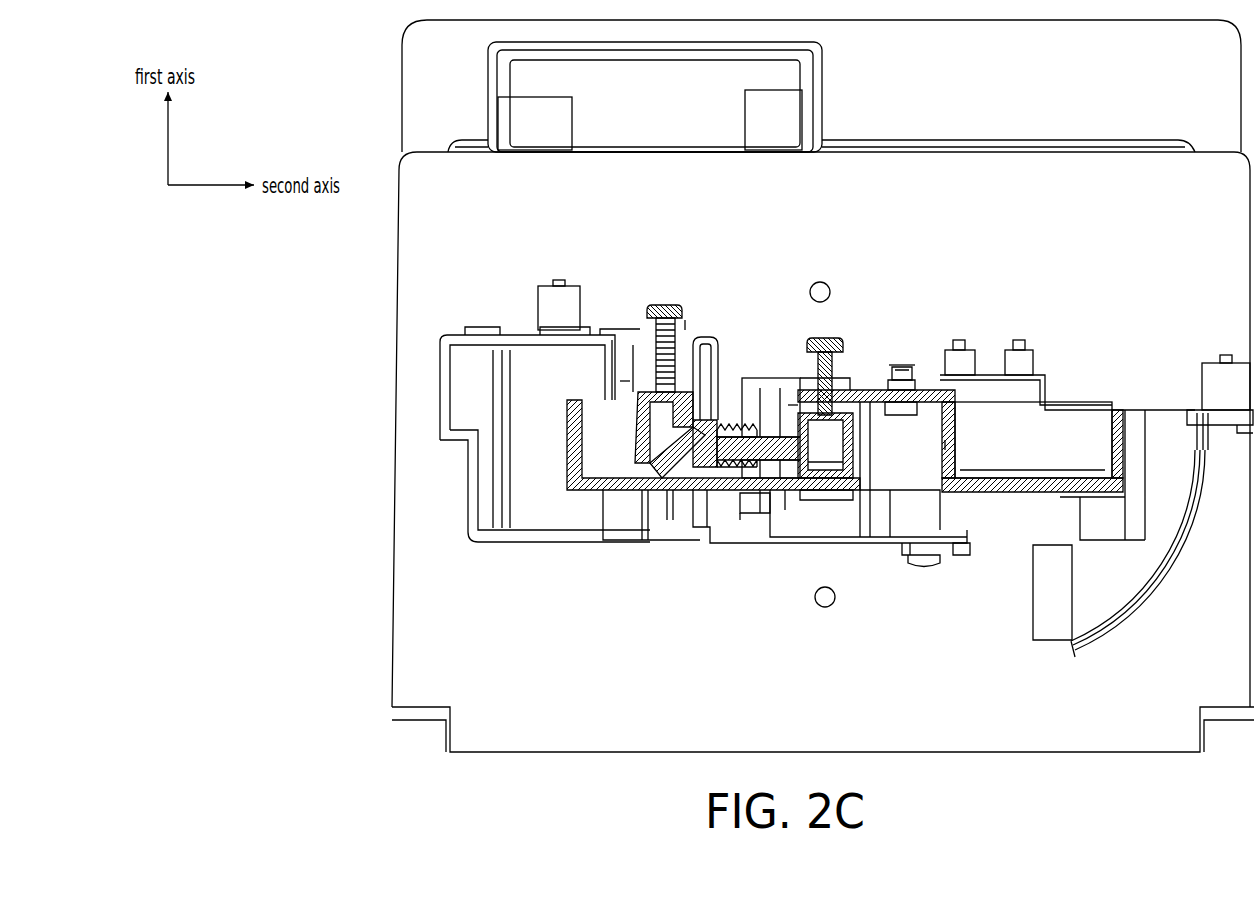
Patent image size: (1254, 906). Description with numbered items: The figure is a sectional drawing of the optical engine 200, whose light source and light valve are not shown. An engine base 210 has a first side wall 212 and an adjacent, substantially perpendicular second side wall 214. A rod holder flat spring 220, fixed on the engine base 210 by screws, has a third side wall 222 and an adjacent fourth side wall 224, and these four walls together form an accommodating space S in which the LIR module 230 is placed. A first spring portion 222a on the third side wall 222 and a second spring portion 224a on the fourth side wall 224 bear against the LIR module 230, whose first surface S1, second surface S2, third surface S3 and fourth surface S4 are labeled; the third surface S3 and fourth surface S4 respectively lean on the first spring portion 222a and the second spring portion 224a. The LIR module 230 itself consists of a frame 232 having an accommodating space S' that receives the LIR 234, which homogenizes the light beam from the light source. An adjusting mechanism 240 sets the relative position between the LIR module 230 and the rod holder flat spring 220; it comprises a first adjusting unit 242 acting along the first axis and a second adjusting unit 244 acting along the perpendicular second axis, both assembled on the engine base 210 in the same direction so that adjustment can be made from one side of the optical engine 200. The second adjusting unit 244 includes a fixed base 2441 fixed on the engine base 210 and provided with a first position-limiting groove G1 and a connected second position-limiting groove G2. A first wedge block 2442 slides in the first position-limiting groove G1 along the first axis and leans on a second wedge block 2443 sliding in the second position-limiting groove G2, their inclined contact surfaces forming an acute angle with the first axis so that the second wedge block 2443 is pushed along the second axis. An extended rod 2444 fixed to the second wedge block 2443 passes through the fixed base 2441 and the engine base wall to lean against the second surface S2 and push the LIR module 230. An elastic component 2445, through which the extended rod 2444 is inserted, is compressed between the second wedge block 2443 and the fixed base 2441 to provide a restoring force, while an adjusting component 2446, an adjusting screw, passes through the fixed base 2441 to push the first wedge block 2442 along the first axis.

The optical engine 200 is at (1145, 720).
The engine base 210 is at (940, 380).
The first side wall 212 is at (800, 378).
The second side wall 214 is at (752, 470).
The rod holder flat spring 220 is at (952, 615).
The third side wall 222 is at (835, 495).
The first spring portion 222a is at (832, 495).
The fourth side wall 224 is at (875, 495).
The second spring portion 224a is at (958, 550).
The LIR module 230 is at (950, 268).
The frame 232 is at (895, 378).
The LIR 234 is at (905, 367).
The adjusting mechanism 240 is at (825, 200).
The first adjusting unit 242 is at (830, 332).
The second adjusting unit 244 is at (660, 303).
The fixed base 2441 is at (637, 382).
The first wedge block 2442 is at (622, 480).
The second wedge block 2443 is at (655, 500).
The extended rod 2444 is at (688, 500).
The elastic component 2445 is at (698, 338).
The adjusting component 2446 is at (647, 315).
The first position-limiting groove G1 is at (688, 318).
The second position-limiting groove G2 is at (745, 500).
The accommodating space S is at (751, 577).
The accommodating space S' is at (783, 577).
The first surface S1 is at (790, 405).
The second surface S2 is at (745, 498).
The third surface S3 is at (820, 500).
The fourth surface S4 is at (945, 445).